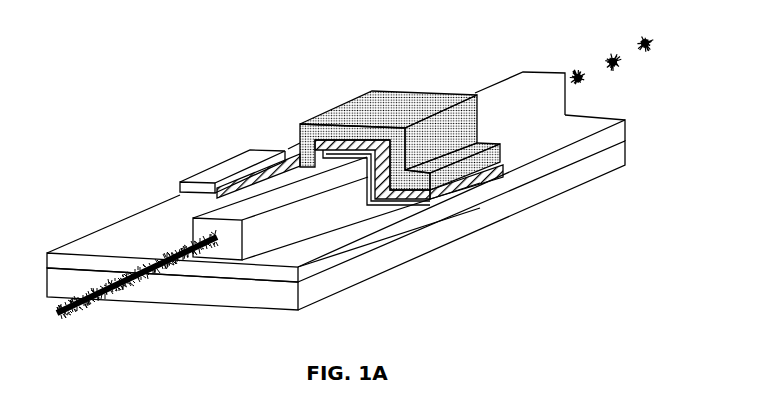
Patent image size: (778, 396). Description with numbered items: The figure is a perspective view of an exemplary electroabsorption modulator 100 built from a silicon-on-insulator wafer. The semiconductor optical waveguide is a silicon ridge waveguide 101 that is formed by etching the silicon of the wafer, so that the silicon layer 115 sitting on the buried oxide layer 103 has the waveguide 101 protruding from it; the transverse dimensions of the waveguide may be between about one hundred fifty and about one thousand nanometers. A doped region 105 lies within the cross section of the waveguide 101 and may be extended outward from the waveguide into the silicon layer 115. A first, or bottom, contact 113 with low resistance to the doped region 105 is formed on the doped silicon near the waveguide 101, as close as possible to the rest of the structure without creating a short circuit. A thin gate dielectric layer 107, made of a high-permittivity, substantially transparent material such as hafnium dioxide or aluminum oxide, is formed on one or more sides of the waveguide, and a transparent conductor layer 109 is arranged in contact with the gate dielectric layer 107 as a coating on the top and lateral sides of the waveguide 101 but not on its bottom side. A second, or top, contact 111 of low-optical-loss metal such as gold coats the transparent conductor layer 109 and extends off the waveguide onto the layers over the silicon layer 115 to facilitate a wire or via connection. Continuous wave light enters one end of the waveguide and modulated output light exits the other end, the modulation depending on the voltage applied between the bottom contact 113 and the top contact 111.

The electroabsorption modulator 100 is at (137, 28).
The silicon ridge waveguide 101 is at (502, 92).
The buried oxide layer 103 is at (557, 183).
The doped region 105 is at (275, 172).
The gate dielectric layer 107 is at (413, 203).
The transparent conductor layer 109 is at (443, 196).
The top contact 111 is at (350, 110).
The bottom contact 113 is at (225, 168).
The silicon layer 115 is at (597, 142).